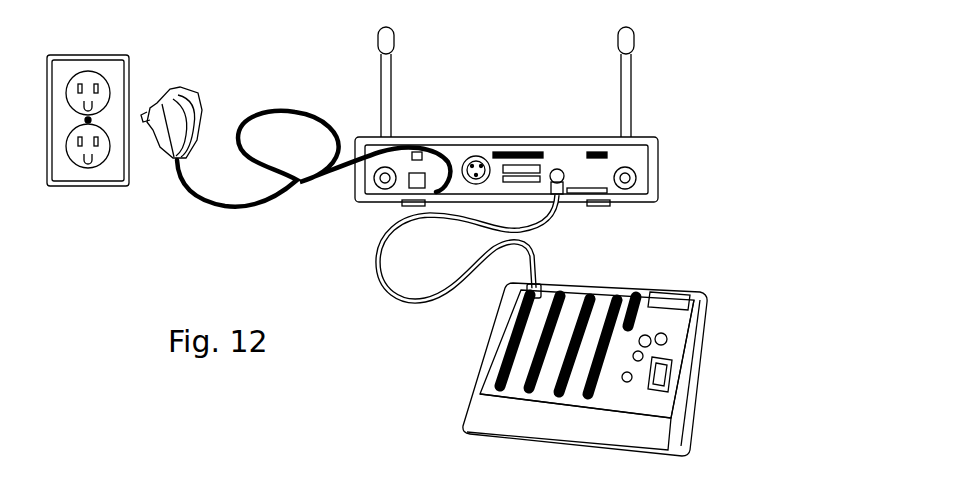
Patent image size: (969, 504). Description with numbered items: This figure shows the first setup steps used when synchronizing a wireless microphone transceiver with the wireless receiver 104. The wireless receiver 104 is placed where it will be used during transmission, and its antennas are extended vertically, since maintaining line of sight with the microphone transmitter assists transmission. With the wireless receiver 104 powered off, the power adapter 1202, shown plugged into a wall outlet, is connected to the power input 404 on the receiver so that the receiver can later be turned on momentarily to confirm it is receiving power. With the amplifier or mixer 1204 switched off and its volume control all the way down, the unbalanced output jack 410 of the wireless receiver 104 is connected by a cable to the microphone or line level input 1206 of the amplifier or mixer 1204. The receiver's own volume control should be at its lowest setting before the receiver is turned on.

The wireless receiver 104 is at (663, 153).
The power input 404 is at (185, 161).
The unbalanced output jack 410 is at (553, 165).
The power adapter 1202 is at (288, 103).
The amplifier or mixer 1204 is at (683, 353).
The microphone or line level input 1206 is at (545, 273).